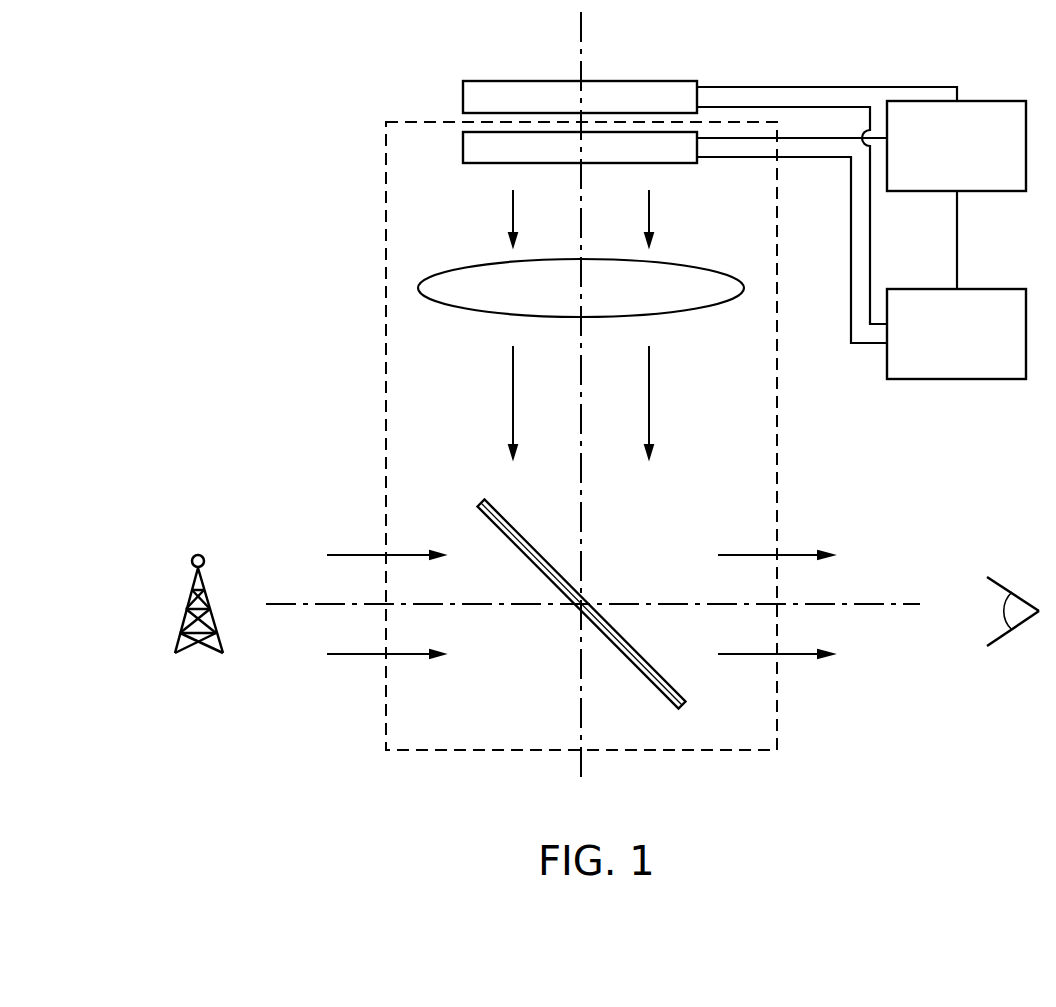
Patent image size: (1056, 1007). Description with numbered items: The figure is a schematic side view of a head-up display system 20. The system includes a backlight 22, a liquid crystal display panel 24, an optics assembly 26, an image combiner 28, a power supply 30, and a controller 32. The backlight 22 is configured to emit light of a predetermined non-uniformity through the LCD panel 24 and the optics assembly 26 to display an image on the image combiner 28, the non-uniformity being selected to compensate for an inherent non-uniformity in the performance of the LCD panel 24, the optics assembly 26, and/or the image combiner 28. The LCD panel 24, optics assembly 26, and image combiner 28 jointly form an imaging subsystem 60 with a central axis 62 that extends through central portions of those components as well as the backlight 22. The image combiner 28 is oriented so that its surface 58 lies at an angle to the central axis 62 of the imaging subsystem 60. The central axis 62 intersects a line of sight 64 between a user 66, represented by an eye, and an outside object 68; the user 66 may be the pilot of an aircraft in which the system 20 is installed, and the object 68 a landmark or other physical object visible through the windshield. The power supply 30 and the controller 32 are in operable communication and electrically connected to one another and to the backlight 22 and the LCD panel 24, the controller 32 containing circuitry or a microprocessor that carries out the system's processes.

The head-up display system 20 is at (262, 99).
The backlight 22 is at (463, 95).
The liquid crystal display panel 24 is at (680, 163).
The optics assembly 26 is at (449, 277).
The image combiner 28 is at (481, 513).
The power supply 30 is at (974, 161).
The controller 32 is at (974, 345).
The surface of the image combiner 58 is at (680, 693).
The imaging subsystem 60 is at (386, 144).
The central axis 62 is at (581, 765).
The line of sight 64 is at (672, 603).
The user 66 is at (1015, 592).
The outside object 68 is at (184, 617).